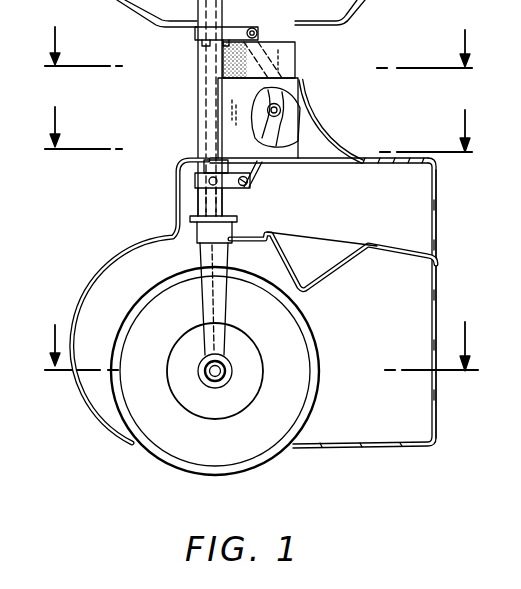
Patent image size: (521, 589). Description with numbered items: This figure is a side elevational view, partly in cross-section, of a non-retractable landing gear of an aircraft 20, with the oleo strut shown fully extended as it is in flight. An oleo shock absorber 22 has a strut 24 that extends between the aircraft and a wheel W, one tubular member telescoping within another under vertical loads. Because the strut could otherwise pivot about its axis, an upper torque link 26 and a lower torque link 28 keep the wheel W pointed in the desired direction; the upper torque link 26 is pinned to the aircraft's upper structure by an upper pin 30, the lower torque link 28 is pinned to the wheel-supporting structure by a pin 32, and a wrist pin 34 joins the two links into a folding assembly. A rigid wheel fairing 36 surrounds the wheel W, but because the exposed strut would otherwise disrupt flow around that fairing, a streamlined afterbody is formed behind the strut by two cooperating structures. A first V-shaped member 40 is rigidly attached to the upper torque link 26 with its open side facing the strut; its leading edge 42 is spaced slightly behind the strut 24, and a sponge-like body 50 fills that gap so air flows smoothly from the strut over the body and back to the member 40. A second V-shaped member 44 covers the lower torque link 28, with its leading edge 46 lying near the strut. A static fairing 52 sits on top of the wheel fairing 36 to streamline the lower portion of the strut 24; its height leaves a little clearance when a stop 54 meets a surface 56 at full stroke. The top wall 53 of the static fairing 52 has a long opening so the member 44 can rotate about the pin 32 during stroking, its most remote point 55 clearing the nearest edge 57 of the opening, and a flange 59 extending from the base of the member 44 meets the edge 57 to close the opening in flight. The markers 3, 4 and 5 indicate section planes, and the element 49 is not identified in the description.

The section line 3- 3 is at (259, 130).
The section line 4- 4 is at (259, 48).
The section line 5- 5 is at (256, 346).
The aircraft 20 is at (131, 20).
The oleo shock absorber 22 is at (146, 203).
The strut 24 is at (200, 122).
The upper torque link 26 is at (260, 33).
The lower torque link 28 is at (254, 172).
The upper pin 30 is at (253, 30).
The pin 32 is at (247, 189).
The wrist pin 34 is at (281, 108).
The wheel fairing 36 is at (101, 283).
The first V-shaped member 40 is at (295, 67).
The leading edge 42 is at (260, 61).
The second V-shaped member 44 is at (318, 131).
The leading edge 46 is at (218, 99).
The frame tube 49 is at (356, 12).
The sponge-like body 50 is at (240, 60).
The static fairing 52 is at (437, 206).
The top wall 53 is at (413, 158).
The stop 54 is at (212, 158).
The point 55 is at (299, 83).
The surface 56 is at (205, 42).
The edge 57 is at (362, 158).
The flange 59 is at (327, 163).
The wheel W is at (175, 443).